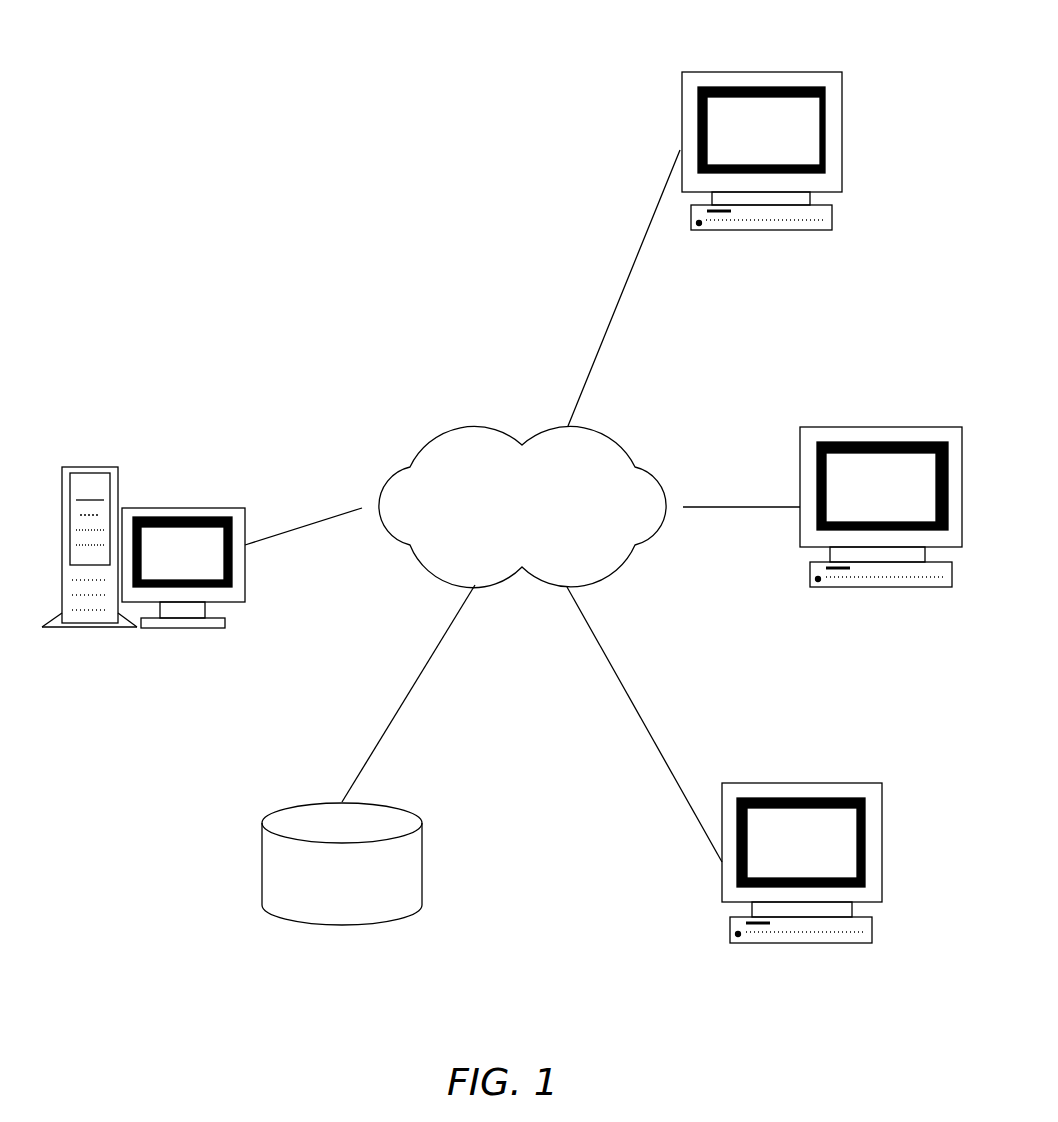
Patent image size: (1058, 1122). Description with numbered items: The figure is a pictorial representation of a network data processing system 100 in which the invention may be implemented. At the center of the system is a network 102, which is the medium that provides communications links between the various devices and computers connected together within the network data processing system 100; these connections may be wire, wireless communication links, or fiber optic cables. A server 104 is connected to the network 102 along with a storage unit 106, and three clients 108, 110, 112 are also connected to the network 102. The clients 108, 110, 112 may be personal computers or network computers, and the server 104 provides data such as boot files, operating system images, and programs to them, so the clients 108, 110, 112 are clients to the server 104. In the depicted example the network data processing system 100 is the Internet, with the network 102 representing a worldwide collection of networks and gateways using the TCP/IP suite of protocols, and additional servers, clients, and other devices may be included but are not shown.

The network data processing system 100 is at (542, 868).
The network 102 is at (476, 428).
The server 104 is at (142, 510).
The storage unit 106 is at (322, 912).
The client 108 is at (692, 82).
The client 110 is at (810, 435).
The client 112 is at (870, 792).